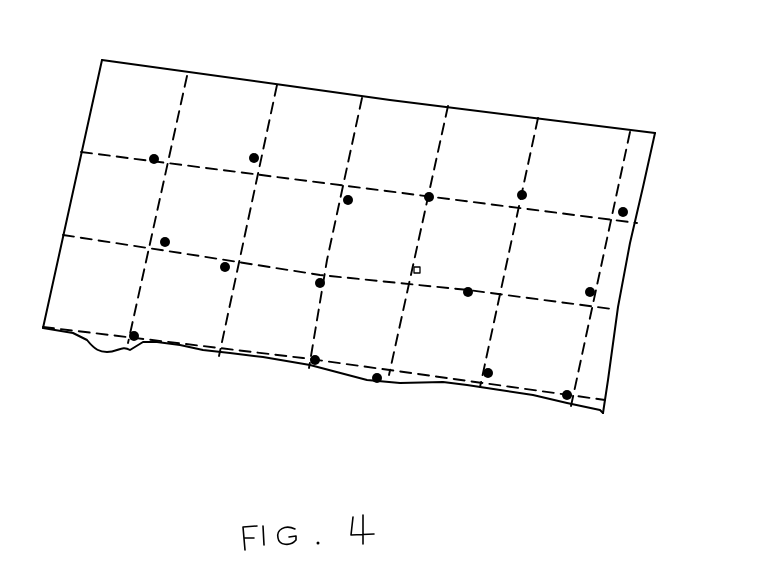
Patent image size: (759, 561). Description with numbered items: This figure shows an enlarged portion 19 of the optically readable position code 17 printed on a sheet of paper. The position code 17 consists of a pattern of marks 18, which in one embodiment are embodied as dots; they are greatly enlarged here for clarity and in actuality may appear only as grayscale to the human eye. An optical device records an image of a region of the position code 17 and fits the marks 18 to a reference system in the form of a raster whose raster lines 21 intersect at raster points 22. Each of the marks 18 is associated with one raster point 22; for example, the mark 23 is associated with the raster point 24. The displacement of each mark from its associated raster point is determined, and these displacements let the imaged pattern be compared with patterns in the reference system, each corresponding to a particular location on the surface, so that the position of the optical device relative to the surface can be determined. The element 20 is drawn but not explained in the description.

The sheet 17 is at (380, 231).
The sensor node 18 is at (135, 340).
The sheet edge 19 is at (621, 109).
The sensor node 20 is at (232, 272).
The grid lines 21 is at (340, 210).
The nodes 22 is at (605, 221).
The node 23 is at (254, 157).
The grid line 24 is at (257, 172).